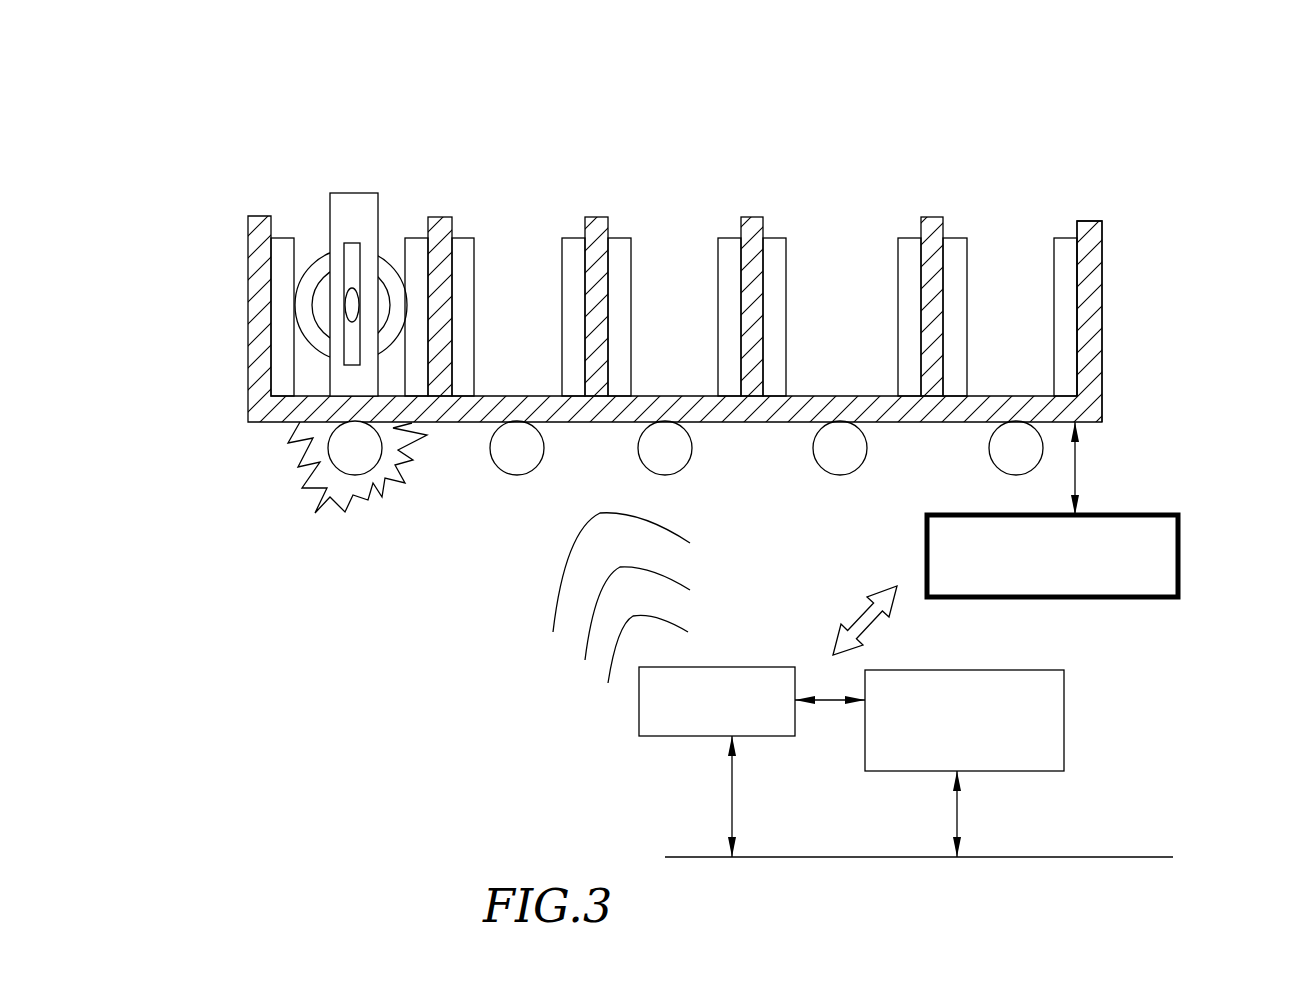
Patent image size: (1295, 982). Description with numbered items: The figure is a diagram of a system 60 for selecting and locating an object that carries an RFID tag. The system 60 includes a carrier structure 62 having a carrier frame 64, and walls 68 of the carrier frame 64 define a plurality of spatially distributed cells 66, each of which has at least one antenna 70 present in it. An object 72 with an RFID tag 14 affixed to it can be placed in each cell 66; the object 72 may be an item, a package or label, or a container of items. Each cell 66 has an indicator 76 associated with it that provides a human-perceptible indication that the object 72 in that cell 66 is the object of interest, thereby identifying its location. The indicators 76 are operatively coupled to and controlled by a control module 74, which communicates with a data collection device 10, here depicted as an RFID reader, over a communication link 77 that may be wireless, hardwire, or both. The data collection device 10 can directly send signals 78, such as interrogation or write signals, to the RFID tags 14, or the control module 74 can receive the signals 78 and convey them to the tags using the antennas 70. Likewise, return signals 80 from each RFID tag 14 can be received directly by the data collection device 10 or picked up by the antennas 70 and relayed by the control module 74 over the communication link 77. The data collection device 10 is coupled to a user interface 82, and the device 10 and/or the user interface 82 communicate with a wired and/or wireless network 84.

The data collection device 10 is at (757, 667).
The RFID tag 14 is at (353, 283).
The system 60 is at (1192, 455).
The carrier structure 62 is at (215, 374).
The carrier frame 64 is at (1102, 292).
The cells 66 is at (307, 232).
The walls 68 is at (438, 217).
The antenna 70 is at (413, 277).
The object 72 is at (344, 230).
The control module 74 is at (1177, 548).
The indicator 76 is at (297, 515).
The communication link 77 is at (848, 600).
The signals 78 is at (552, 595).
The signals 80 is at (312, 293).
The user interface 82 is at (1064, 713).
The network 84 is at (900, 857).